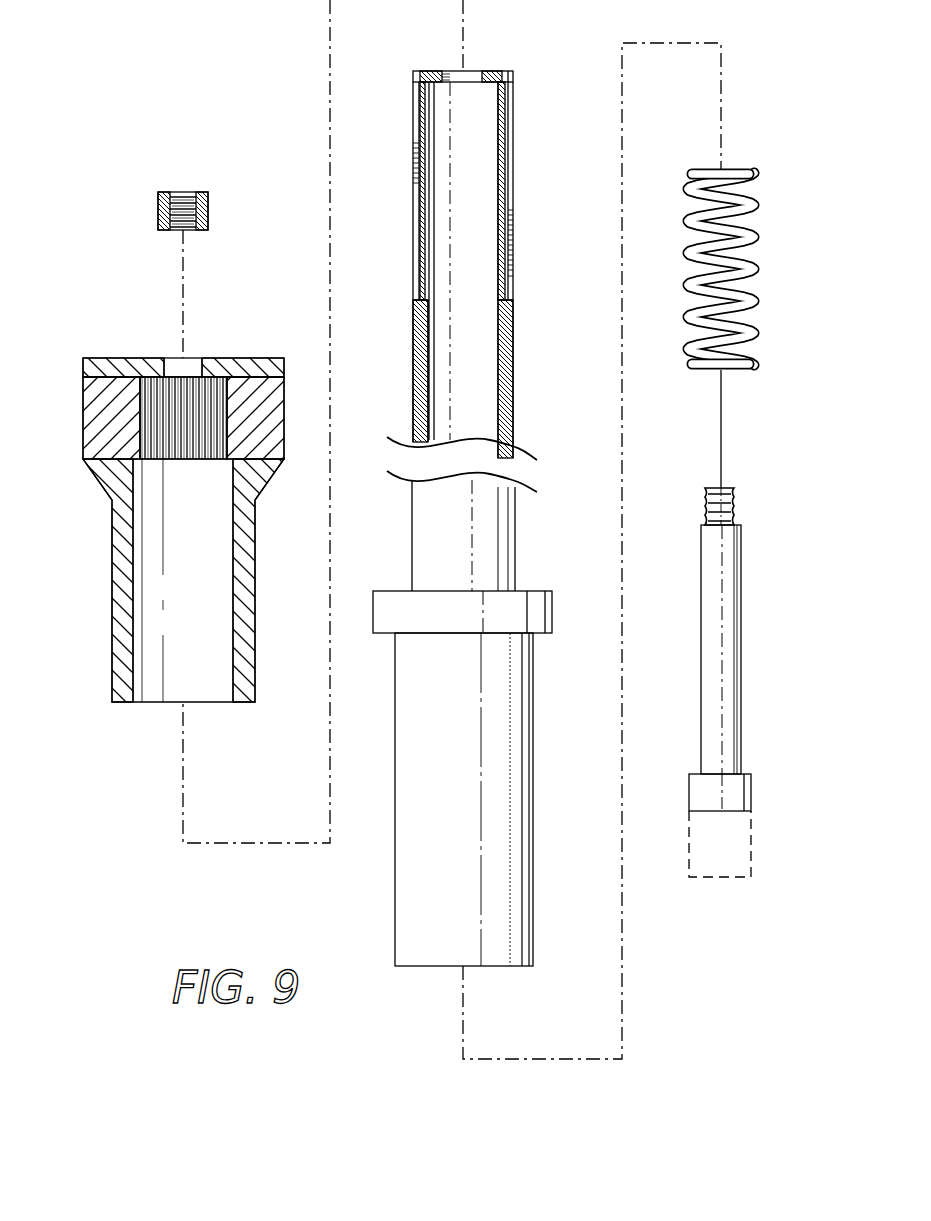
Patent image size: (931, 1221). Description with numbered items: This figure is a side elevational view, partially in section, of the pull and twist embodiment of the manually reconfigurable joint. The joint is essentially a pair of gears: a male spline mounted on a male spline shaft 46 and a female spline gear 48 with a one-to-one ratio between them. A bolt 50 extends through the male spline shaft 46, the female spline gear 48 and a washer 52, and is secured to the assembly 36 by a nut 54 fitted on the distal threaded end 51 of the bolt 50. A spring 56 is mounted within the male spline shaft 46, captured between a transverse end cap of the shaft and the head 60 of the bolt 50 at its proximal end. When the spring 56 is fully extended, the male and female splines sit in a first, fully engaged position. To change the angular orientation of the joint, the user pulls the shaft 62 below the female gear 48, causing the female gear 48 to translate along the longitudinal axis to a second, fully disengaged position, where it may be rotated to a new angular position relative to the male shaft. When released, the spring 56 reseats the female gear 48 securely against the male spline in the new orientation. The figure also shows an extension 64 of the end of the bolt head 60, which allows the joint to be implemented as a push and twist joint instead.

The assembly 36 is at (420, 872).
The male spline shaft 46 is at (513, 135).
The female spline gear 48 is at (95, 418).
The bolt 50 is at (741, 696).
The distal threaded end 51 is at (734, 509).
The washer 52 is at (117, 367).
The nut 54 is at (208, 212).
The spring 56 is at (755, 267).
The bolt head 60 is at (751, 790).
The shaft 62 is at (125, 555).
The extension 64 is at (731, 877).